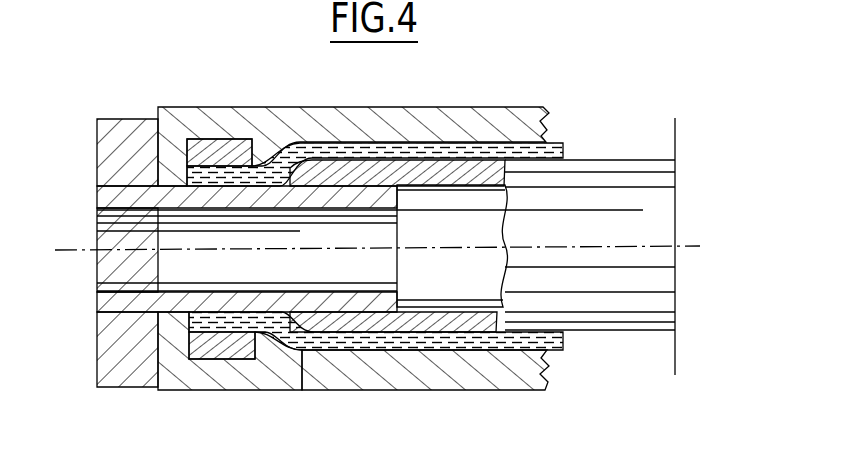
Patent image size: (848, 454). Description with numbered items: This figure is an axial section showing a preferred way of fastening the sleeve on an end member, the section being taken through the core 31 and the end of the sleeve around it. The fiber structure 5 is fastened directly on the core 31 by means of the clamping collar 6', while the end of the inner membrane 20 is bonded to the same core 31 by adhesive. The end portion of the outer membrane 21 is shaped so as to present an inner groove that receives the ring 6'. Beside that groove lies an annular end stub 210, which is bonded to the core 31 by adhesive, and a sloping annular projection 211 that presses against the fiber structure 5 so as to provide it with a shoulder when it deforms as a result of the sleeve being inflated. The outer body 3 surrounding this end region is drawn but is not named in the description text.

The coupling nut 3 is at (121, 138).
The clamping collar 6' is at (219, 108).
The fiber structure 5 is at (430, 157).
The inner membrane 20 is at (609, 198).
The outer membrane 21 is at (294, 378).
The annular end stub 210 is at (170, 337).
The sloping annular projection 211 is at (267, 348).
The core 31 is at (332, 297).